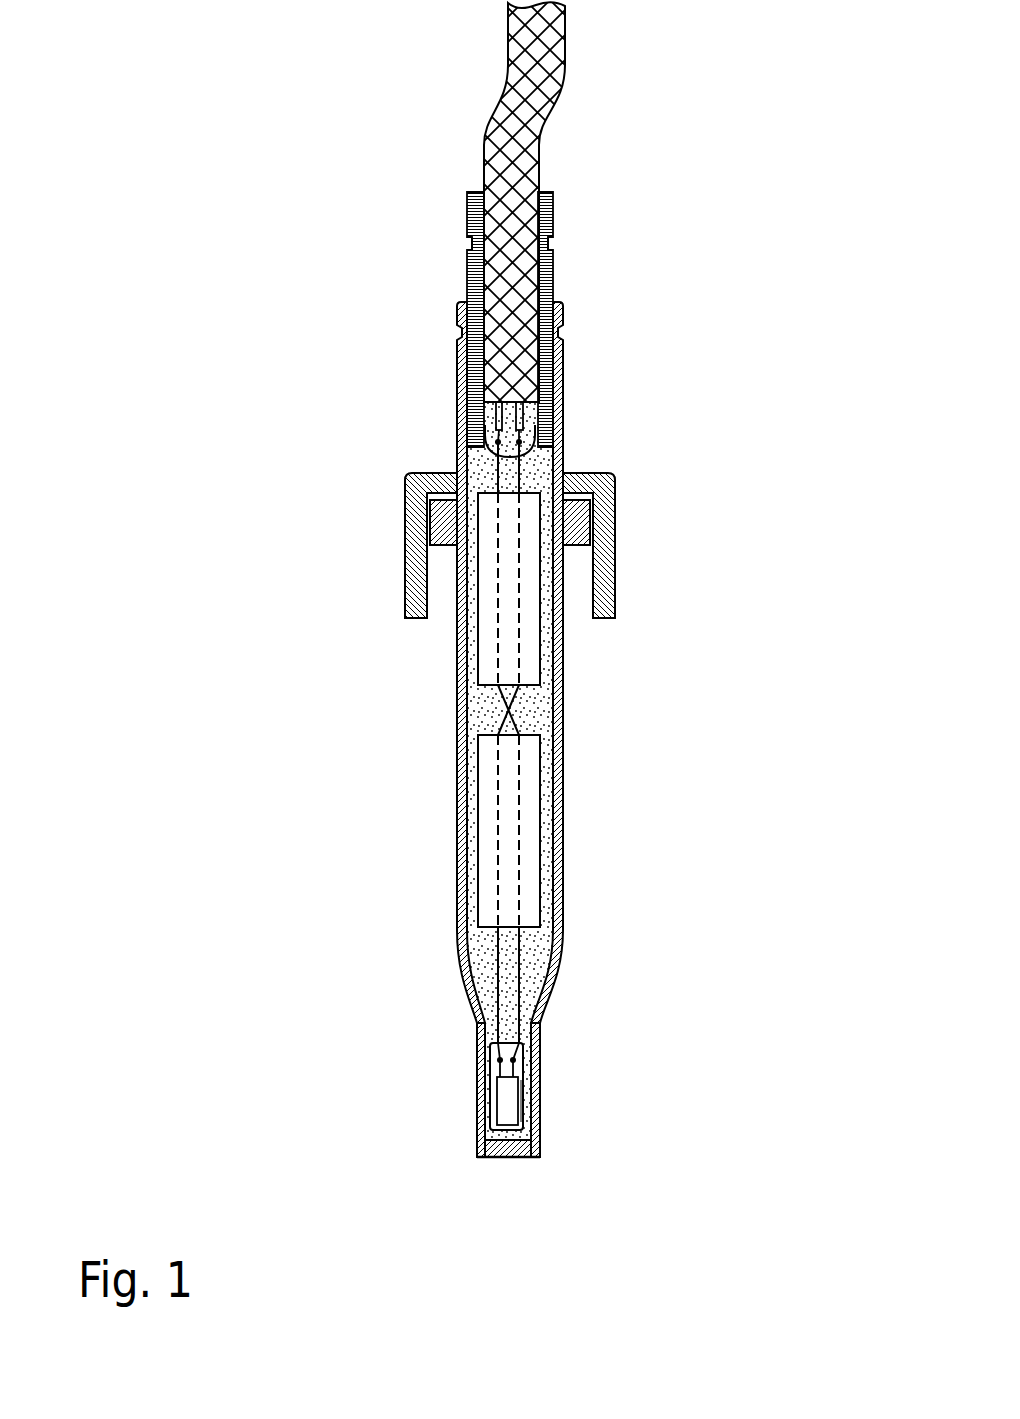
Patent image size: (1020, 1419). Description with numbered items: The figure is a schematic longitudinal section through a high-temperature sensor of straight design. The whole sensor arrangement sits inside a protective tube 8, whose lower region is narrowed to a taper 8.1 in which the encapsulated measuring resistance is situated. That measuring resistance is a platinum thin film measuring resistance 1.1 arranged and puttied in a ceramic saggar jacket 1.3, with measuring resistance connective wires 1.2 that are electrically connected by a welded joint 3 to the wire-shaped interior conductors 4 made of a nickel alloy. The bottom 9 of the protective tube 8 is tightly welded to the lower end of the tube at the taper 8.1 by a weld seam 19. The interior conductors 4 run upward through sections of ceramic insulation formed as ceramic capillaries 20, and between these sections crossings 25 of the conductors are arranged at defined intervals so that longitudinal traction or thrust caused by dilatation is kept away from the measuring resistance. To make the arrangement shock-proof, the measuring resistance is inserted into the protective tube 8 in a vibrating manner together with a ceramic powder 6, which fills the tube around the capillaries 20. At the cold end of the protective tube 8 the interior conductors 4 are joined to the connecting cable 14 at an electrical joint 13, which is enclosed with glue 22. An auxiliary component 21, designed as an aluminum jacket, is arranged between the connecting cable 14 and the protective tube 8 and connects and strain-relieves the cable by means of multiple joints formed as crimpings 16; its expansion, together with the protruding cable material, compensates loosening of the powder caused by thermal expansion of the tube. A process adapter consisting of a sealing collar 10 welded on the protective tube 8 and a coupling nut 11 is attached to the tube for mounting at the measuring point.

The connecting cable 14 is at (543, 133).
The crimpings 16 is at (557, 333).
The auxiliary component 21 is at (475, 273).
The glue 22 is at (460, 425).
The electrical joint 13 is at (557, 435).
The sealing collar 10 is at (565, 518).
The coupling nut 11 is at (602, 598).
The ceramic capillaries 20 is at (485, 765).
The crossings 25 is at (512, 715).
The protective tube 8 is at (562, 795).
The ceramic powder 6 is at (480, 958).
The interior conductors 4 is at (518, 948).
The welded joint 3 is at (498, 1061).
The measuring resistance connective wires 1.2 is at (512, 1070).
The ceramic saggar jacket 1.3 is at (522, 1088).
The taper 8.1 is at (477, 1097).
The platinum thin film measuring resistance 1.1 is at (508, 1117).
The bottom 9 is at (493, 1157).
The weld seam 19 is at (538, 1160).